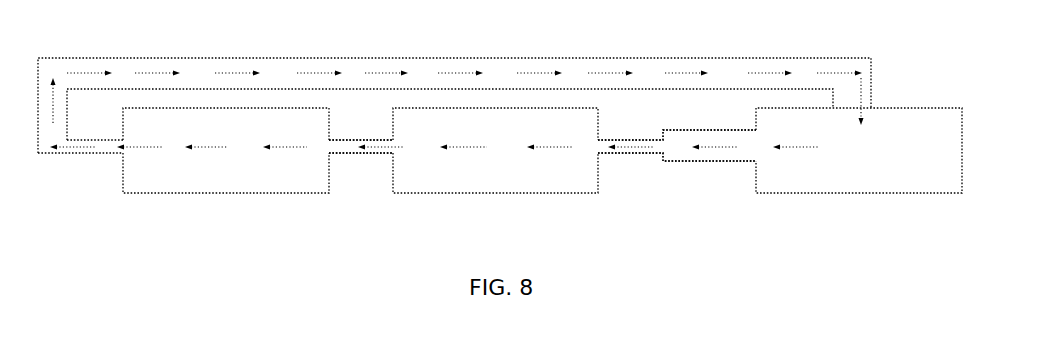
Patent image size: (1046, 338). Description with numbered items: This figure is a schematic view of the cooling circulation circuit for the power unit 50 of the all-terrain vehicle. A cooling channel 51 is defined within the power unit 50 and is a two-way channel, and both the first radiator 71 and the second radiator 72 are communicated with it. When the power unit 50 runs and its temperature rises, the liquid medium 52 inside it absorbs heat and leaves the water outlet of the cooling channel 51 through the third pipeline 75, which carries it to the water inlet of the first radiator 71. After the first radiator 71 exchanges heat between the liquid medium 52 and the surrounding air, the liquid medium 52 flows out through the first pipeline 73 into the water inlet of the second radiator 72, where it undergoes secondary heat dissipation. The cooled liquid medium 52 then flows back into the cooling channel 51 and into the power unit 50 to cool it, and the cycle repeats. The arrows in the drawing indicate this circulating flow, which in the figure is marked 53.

The power unit 50 is at (865, 188).
The cooling channel 51 is at (455, 59).
The liquid medium 52 is at (612, 73).
The air flow 53 is at (200, 147).
The first radiator 71 is at (497, 195).
The second radiator 72 is at (90, 153).
The first pipeline 73 is at (360, 153).
The third pipeline 75 is at (630, 153).